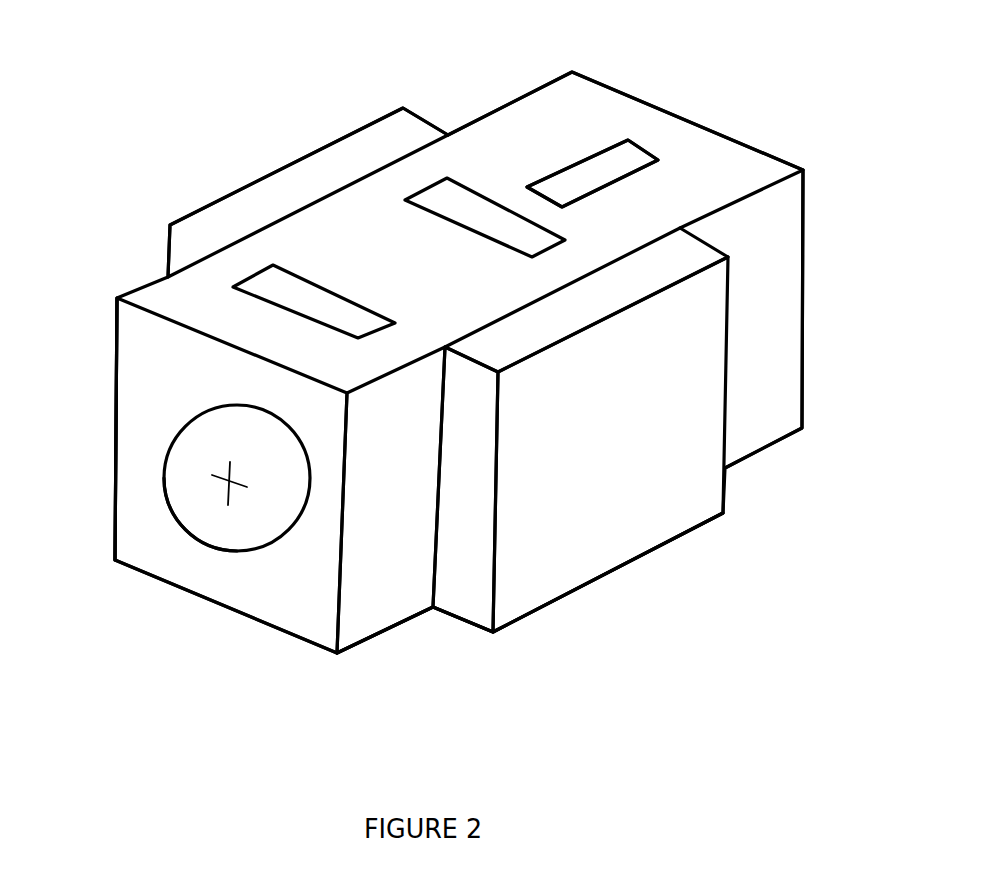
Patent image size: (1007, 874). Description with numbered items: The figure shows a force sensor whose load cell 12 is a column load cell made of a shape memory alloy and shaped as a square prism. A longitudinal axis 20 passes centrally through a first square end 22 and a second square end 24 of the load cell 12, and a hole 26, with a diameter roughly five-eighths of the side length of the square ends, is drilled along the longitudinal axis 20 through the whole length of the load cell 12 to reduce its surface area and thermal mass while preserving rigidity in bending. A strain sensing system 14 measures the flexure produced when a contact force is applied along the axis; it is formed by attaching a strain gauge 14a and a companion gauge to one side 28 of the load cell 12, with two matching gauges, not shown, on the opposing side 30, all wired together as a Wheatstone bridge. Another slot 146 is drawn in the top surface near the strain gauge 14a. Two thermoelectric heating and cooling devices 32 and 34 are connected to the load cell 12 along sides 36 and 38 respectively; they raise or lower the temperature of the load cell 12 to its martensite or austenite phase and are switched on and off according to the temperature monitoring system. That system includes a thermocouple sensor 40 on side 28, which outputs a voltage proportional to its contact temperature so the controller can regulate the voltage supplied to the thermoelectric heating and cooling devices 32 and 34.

The load cell 12 is at (527, 127).
The strain sensing system 14 is at (500, 217).
The strain gauge 14a is at (632, 155).
The slot 146 is at (448, 200).
The longitudinal axis 20 is at (300, 445).
The first square end 22 is at (310, 627).
The second square end 24 is at (637, 97).
The hole 26 is at (223, 552).
The side of the load cell 28 is at (178, 292).
The opposing side of the load cell 30 is at (768, 447).
The thermoelectric heating and cooling device 32 is at (583, 553).
The thermoelectric heating and cooling device 34 is at (302, 187).
The side of the load cell 36 is at (407, 597).
The side of the load cell 38 is at (117, 373).
The thermocouple sensor 40 is at (277, 283).